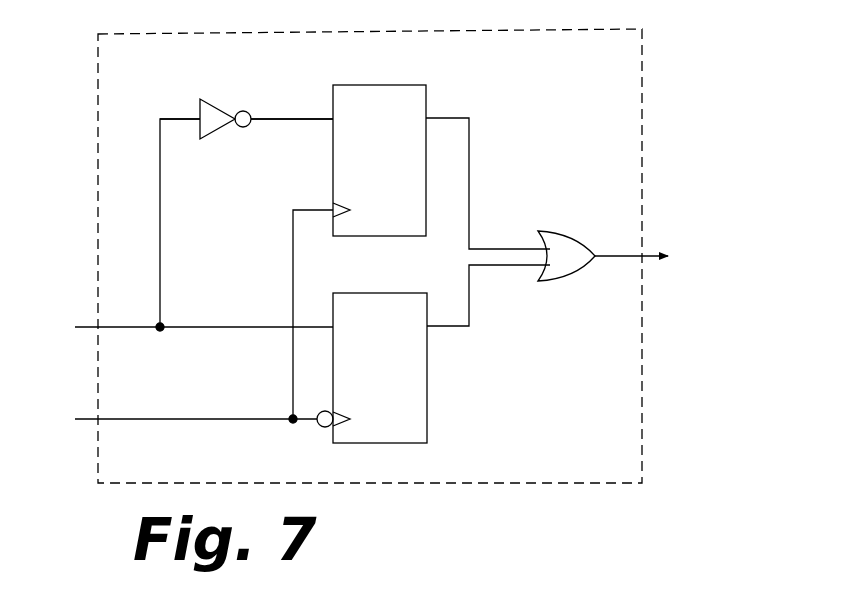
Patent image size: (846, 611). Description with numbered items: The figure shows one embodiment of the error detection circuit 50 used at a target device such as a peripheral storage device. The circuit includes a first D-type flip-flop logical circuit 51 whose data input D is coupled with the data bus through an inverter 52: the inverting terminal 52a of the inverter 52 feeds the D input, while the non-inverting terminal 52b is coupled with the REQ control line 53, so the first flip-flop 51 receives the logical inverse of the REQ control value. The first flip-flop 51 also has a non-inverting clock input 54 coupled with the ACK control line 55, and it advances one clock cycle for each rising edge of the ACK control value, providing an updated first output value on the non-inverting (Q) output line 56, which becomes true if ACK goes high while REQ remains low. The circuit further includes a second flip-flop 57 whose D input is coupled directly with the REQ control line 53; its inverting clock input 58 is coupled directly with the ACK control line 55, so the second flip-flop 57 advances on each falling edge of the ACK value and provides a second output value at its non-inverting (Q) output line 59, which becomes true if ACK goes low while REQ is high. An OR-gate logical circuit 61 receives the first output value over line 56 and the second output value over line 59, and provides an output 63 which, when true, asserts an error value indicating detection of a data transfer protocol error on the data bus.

The error detection circuit 50 is at (648, 74).
The first D-type flip-flop logical circuit 51 is at (387, 98).
The inverter 52 is at (215, 127).
The inverting terminal 52a is at (272, 116).
The non-inverting terminal 52b is at (178, 116).
The REQ control line 53 is at (51, 312).
The non-inverting clock input 54 is at (348, 216).
The ACK control line 55 is at (36, 438).
The non-inverting (Q) output line 56 is at (447, 114).
The second flip-flop 57 is at (397, 400).
The inverting clock input 58 is at (348, 430).
The non-inverting (Q) output line 59 is at (458, 330).
The OR-gate logical circuit 61 is at (567, 262).
The output 63 is at (652, 253).